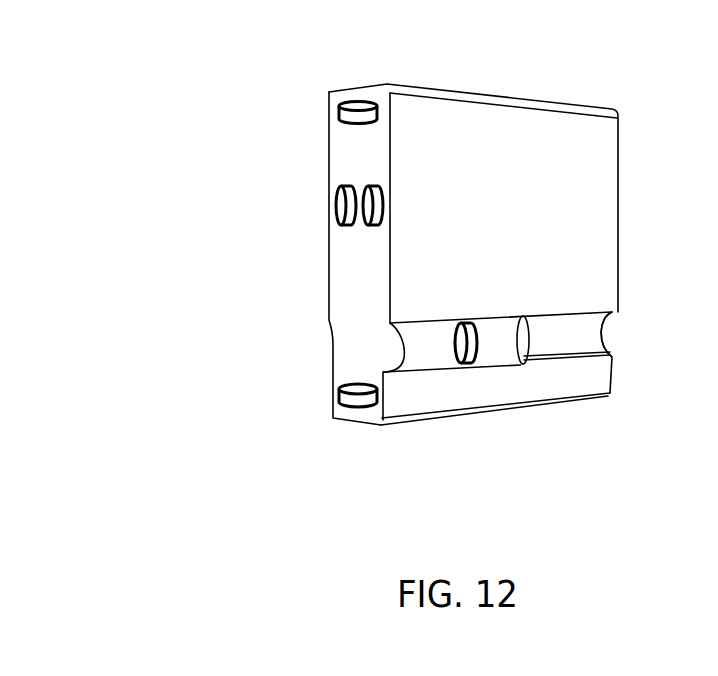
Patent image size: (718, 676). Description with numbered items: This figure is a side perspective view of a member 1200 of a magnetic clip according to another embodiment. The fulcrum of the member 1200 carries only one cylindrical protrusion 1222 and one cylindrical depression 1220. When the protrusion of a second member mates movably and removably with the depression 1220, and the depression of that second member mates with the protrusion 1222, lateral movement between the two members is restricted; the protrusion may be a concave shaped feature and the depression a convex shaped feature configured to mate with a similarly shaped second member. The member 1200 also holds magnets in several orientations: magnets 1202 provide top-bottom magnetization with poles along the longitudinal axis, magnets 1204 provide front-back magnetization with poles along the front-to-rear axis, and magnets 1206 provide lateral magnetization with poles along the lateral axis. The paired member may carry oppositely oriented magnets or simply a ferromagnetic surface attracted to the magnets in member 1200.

The member 1200 is at (478, 50).
The magnets 1202 is at (340, 113).
The magnets 1204 is at (376, 228).
The magnets 1206 is at (467, 364).
The cylindrical depression 1220 is at (610, 332).
The cylindrical protrusion 1222 is at (512, 323).